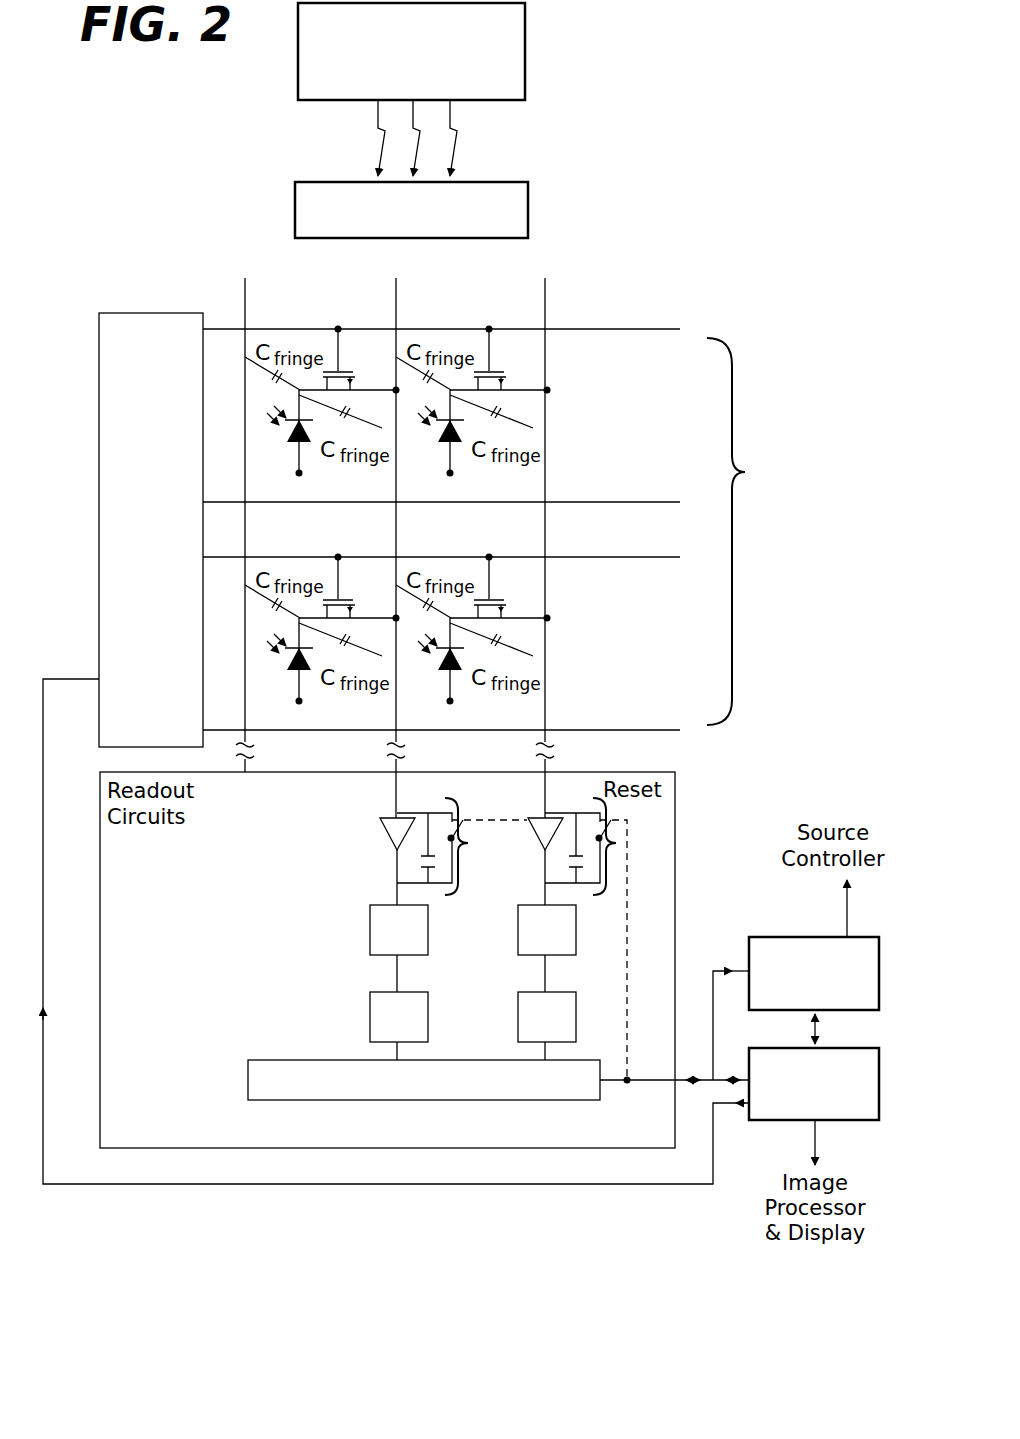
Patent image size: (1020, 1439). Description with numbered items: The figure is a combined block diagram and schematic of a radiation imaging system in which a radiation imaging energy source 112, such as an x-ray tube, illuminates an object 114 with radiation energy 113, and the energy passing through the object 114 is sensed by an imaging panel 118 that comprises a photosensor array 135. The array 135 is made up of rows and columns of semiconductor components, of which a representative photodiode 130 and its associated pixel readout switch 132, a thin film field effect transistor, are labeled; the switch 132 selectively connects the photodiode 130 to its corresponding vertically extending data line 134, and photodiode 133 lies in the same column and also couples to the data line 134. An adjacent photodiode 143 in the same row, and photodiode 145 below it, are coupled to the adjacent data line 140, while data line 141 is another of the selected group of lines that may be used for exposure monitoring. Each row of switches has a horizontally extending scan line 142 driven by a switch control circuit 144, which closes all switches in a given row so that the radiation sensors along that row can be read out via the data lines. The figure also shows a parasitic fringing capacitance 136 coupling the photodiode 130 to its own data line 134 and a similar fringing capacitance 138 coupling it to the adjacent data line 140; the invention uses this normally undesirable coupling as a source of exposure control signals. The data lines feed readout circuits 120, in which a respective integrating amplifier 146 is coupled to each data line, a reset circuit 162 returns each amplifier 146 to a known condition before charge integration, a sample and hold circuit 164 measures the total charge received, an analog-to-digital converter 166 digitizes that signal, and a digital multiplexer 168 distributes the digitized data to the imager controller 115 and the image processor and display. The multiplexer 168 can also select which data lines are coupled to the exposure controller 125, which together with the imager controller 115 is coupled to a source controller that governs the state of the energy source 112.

The radiation imaging energy source 112 is at (525, 55).
The radiation energy 113 is at (457, 131).
The object 114 is at (528, 215).
The imager controller 115 is at (762, 1120).
The imaging panel 118 is at (600, 420).
The readout circuits 120 is at (99, 1108).
The exposure controller 125 is at (762, 937).
The photodiode 130 is at (457, 446).
The pixel readout switch 132 is at (500, 360).
The photodiode 133 is at (457, 674).
The data line 134 is at (545, 310).
The photosensor array 135 is at (749, 531).
The fringing capacitance 136 is at (526, 409).
The fringing capacitance 138 is at (423, 414).
The adjacent data line 140 is at (396, 285).
The data line 141 is at (248, 313).
The scan line 142 is at (228, 329).
The photodiode 143 is at (305, 446).
The switch control circuit 144 is at (127, 313).
The photodiode 145 is at (305, 674).
The integrating amplifier 146 is at (383, 835).
The reset circuit 162 is at (533, 939).
The sample and hold circuit 164 is at (370, 937).
The analog-to-digital converter 166 is at (370, 1017).
The digital multiplexer 168 is at (248, 1065).